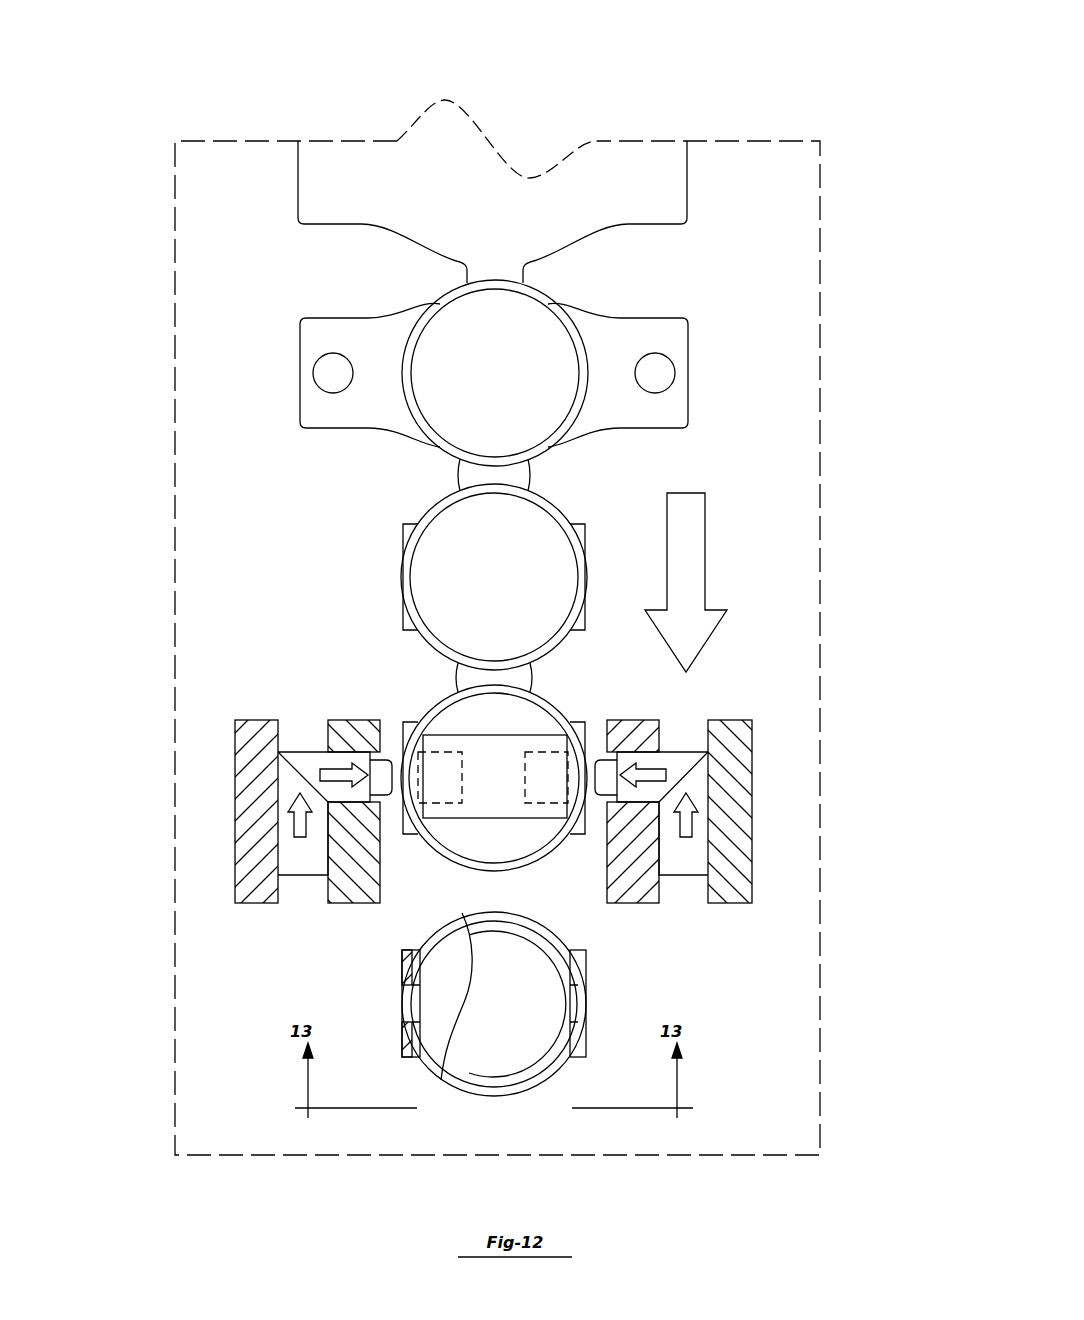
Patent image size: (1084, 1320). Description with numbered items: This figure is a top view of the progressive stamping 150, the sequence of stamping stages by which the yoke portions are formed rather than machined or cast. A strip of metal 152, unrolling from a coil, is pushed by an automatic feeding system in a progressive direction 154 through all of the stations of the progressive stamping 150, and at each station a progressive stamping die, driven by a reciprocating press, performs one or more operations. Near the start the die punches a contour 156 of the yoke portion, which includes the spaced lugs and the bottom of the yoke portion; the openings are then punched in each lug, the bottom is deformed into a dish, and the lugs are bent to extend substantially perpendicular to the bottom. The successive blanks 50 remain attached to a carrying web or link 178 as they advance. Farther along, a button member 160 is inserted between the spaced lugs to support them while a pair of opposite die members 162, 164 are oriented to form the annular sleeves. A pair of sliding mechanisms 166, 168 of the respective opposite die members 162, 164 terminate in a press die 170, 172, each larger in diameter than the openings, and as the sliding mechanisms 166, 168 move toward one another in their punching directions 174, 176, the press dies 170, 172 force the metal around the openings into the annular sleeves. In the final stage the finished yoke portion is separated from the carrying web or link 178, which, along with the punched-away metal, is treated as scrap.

The progressive stamping 150 is at (148, 179).
The strip of metal 152 is at (434, 170).
The progressive direction 154 is at (688, 547).
The contour 156 is at (655, 224).
The disc element 50 is at (486, 379).
The carrying web or link 178 is at (497, 266).
The button member 160 is at (492, 775).
The opposite die member 162 is at (258, 735).
The opposite die member 164 is at (735, 735).
The sliding mechanism 166 is at (310, 763).
The sliding mechanism 168 is at (682, 765).
The press die 170 is at (386, 787).
The press die 172 is at (604, 790).
The punching direction 174 is at (348, 767).
The right guide block 176 is at (642, 775).